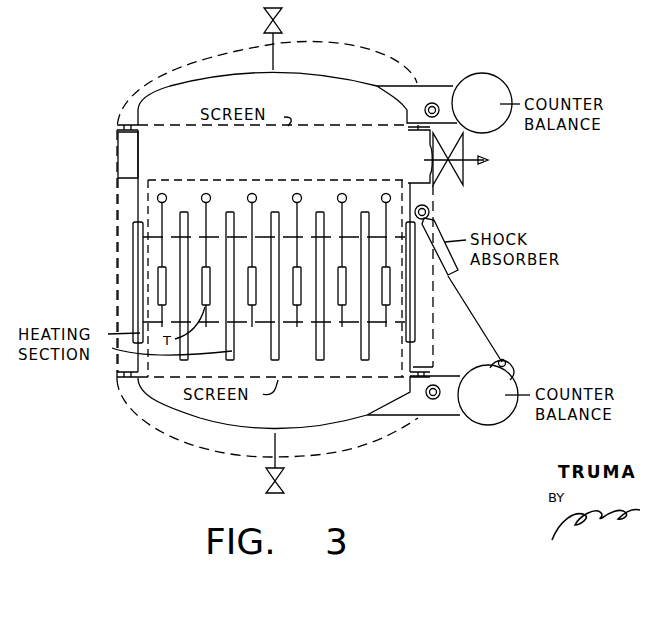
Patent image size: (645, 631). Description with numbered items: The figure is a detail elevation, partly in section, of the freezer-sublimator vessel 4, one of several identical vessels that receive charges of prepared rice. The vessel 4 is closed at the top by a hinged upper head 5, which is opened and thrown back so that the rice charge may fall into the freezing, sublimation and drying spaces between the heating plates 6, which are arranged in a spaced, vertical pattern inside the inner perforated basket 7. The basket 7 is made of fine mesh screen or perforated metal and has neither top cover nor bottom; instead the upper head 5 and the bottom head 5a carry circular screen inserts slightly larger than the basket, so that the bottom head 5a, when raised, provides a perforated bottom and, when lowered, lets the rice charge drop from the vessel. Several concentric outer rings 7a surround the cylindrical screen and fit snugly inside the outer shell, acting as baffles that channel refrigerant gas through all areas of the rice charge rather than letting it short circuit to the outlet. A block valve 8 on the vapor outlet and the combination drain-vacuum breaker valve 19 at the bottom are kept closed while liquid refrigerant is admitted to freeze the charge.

The freezer-sublimator vessel 4 is at (138, 168).
The hinged upper head 5 is at (313, 78).
The bottom head 5a is at (313, 416).
The heating plates 6 is at (362, 334).
The inner perforated basket 7 is at (252, 180).
The concentric outer rings 7a is at (382, 324).
The block valve 8 is at (456, 182).
The combination drain-vacuum breaker valve 19 is at (284, 485).